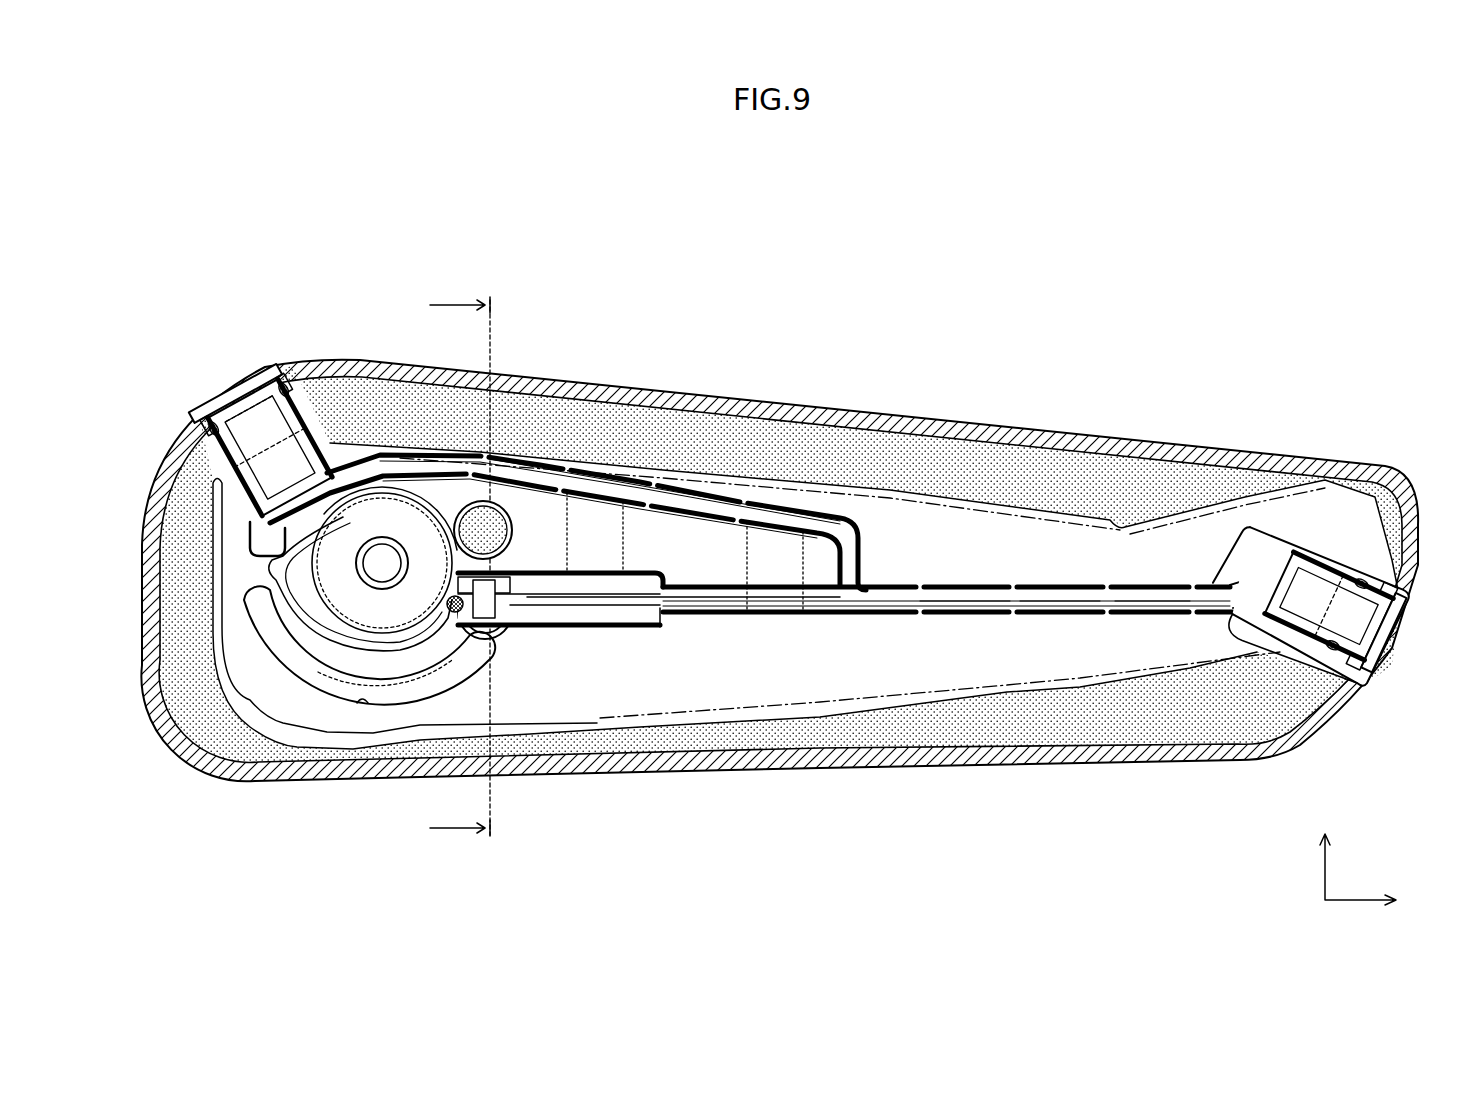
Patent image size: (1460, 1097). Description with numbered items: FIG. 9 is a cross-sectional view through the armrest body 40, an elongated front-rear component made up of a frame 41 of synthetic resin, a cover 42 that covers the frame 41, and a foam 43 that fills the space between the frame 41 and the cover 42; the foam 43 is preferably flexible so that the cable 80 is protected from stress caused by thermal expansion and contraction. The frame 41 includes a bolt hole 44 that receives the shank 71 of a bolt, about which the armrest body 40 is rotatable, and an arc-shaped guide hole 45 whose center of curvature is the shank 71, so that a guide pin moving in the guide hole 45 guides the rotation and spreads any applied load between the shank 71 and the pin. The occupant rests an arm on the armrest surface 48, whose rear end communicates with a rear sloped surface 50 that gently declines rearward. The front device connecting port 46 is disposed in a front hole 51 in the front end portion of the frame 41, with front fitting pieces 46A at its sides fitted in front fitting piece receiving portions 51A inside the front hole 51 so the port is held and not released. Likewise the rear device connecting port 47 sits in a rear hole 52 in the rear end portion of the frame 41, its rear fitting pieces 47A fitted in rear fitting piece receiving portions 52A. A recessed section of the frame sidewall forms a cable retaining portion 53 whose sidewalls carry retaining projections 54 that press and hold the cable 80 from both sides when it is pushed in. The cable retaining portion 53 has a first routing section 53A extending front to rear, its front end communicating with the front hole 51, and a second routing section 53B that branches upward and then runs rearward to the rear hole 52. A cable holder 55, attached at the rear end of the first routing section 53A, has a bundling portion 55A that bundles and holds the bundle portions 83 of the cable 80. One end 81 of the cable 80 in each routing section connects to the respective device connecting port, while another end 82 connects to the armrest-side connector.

The armrest body 40 is at (785, 260).
The frame 41 is at (1033, 550).
The cover 42 is at (880, 420).
The foam 43 is at (960, 455).
The bolt hole 44 is at (375, 575).
The guide hole 45 is at (363, 708).
The front device connecting port 46 is at (1395, 632).
The front fitting pieces 46A is at (1337, 565).
The rear device connecting port 47 is at (245, 382).
The rear fitting pieces 47A is at (312, 432).
The armrest surface 48 is at (810, 400).
The rear sloped surface 50 is at (1352, 686).
The front hole 51 is at (1405, 600).
The front fitting piece receiving portions 51A is at (1362, 568).
The rear hole 52 is at (228, 415).
The rear fitting piece receiving portions 52A is at (300, 423).
The cable retaining portion 53 is at (648, 623).
The first routing section 53A is at (796, 612).
The second routing section 53B is at (717, 497).
The retaining projections 54 is at (657, 487).
The cable holder 55 is at (533, 500).
The bundling portion 55A is at (463, 643).
The shank 71 is at (363, 570).
The cable 80 is at (723, 623).
The end 81 is at (258, 524).
The another end 82 is at (497, 612).
The bundle portions 83 is at (462, 612).